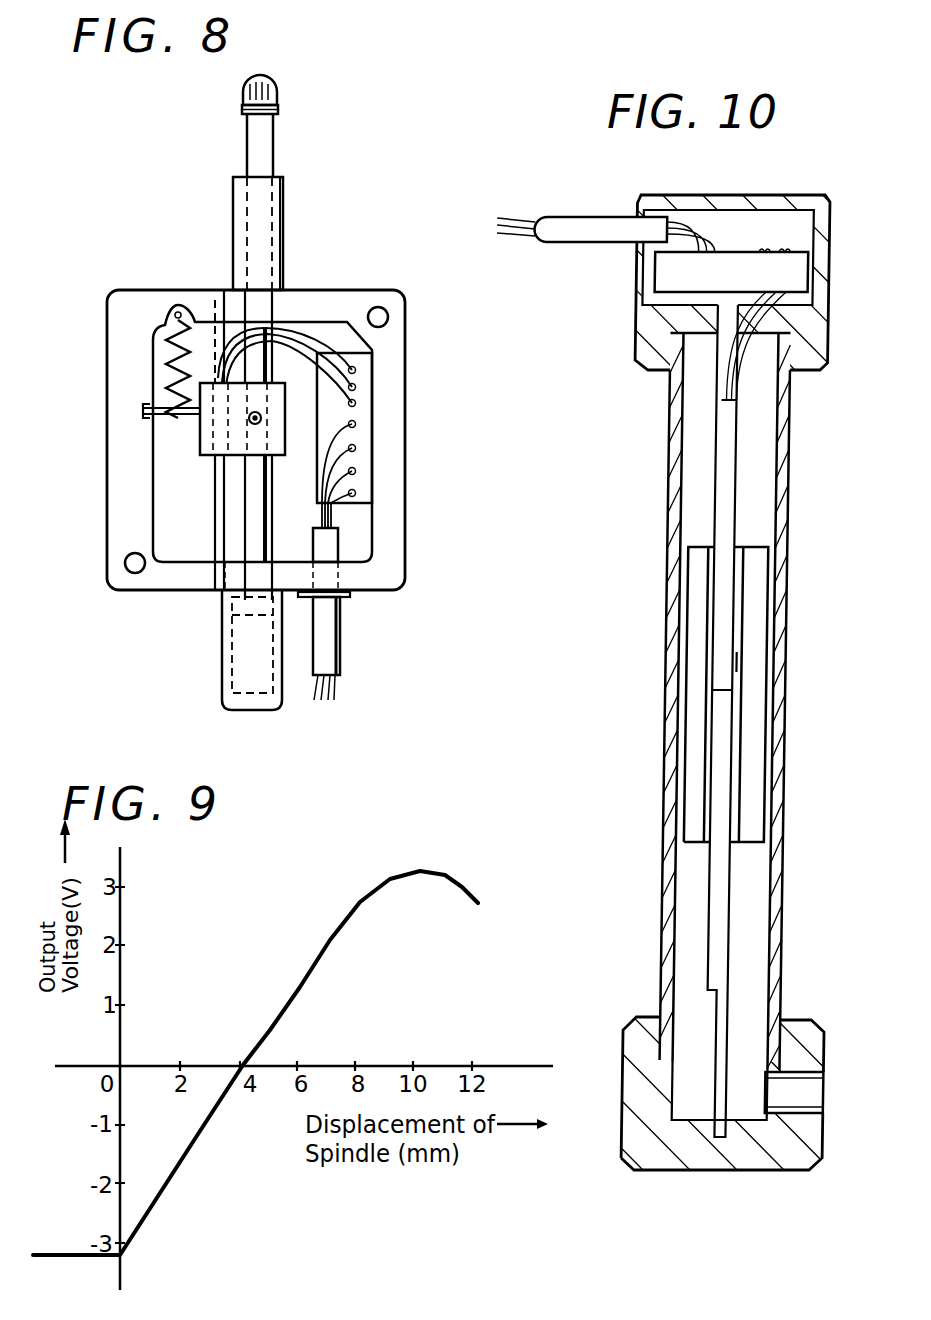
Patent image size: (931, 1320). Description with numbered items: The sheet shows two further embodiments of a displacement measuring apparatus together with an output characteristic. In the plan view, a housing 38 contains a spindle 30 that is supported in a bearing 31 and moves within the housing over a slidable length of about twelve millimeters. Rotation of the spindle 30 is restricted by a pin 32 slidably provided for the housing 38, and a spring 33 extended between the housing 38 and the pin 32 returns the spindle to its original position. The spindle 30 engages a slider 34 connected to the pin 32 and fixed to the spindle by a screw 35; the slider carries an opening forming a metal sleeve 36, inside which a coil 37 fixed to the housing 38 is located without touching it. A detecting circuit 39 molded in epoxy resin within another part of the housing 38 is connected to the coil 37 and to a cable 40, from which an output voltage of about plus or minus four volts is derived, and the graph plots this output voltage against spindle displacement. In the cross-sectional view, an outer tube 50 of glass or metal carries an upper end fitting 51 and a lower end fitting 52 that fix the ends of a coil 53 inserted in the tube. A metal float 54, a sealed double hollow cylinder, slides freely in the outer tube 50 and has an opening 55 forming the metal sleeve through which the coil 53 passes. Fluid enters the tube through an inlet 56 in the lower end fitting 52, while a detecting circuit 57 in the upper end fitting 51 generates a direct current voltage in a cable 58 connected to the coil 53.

In FIG. 8, the spindle 30 is at (263, 157).
In FIG. 8, the bearing 31 is at (273, 231).
In FIG. 8, the pin 32 is at (163, 405).
In FIG. 8, the spring 33 is at (153, 337).
In FIG. 8, the slider 34 is at (200, 422).
In FIG. 8, the screw 35 is at (262, 418).
In FIG. 8, the metal sleeve 36 is at (200, 446).
In FIG. 8, the coil 37 is at (215, 490).
In FIG. 8, the housing 38 is at (373, 300).
In FIG. 8, the detecting circuit 39 is at (365, 482).
In FIG. 8, the cable 40 is at (327, 640).
In FIG. 10, the outer tube 50 is at (665, 470).
In FIG. 10, the upper end fitting 51 is at (800, 363).
In FIG. 10, the lower end fitting 52 is at (632, 1037).
In FIG. 10, the coil 53 is at (722, 872).
In FIG. 10, the float 54 is at (752, 578).
In FIG. 10, the opening 55 is at (737, 664).
In FIG. 10, the inlet 56 is at (813, 1095).
In FIG. 10, the detecting circuit 57 is at (664, 268).
In FIG. 10, the cable 58 is at (566, 232).